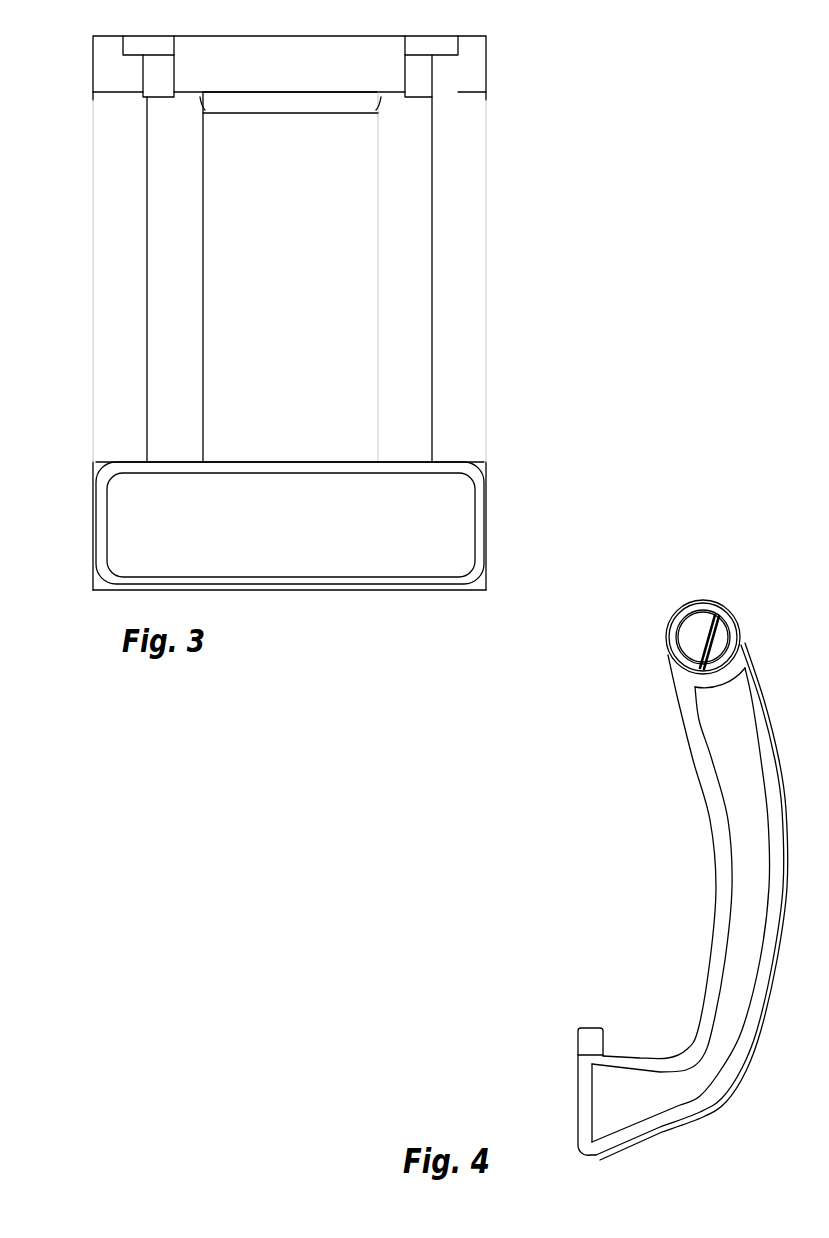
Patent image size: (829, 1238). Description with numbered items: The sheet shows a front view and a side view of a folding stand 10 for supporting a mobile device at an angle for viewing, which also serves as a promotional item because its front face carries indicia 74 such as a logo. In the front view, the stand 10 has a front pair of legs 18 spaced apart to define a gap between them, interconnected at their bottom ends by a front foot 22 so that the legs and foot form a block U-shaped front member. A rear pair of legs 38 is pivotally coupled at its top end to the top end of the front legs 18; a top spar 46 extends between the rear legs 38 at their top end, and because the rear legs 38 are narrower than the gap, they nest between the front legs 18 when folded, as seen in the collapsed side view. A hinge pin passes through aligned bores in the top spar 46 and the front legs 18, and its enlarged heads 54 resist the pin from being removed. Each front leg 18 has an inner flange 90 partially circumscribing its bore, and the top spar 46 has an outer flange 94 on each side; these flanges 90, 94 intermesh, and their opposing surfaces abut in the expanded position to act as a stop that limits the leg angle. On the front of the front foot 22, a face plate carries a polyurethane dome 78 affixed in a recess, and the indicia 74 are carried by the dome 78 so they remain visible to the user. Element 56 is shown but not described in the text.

In FIG. 3, the folding stand 10 is at (520, 288).
In FIG. 4, the folding stand 10 is at (645, 888).
In FIG. 3, the front pair of legs 18 is at (115, 243).
In FIG. 4, the front pair of legs 18 is at (710, 780).
In FIG. 3, the front foot 22 is at (478, 530).
In FIG. 4, the front foot 22 is at (625, 1097).
In FIG. 3, the rear pair of legs 38 is at (170, 292).
In FIG. 3, the top spar 46 is at (290, 55).
In FIG. 4, the enlarged heads 54 is at (718, 640).
In FIG. 3, the bezel 56 is at (103, 540).
In FIG. 3, the indicia 74 is at (273, 553).
In FIG. 3, the polyurethane dome 78 is at (442, 558).
In FIG. 3, the inner flange 90 is at (160, 72).
In FIG. 3, the outer flange 94 is at (155, 48).